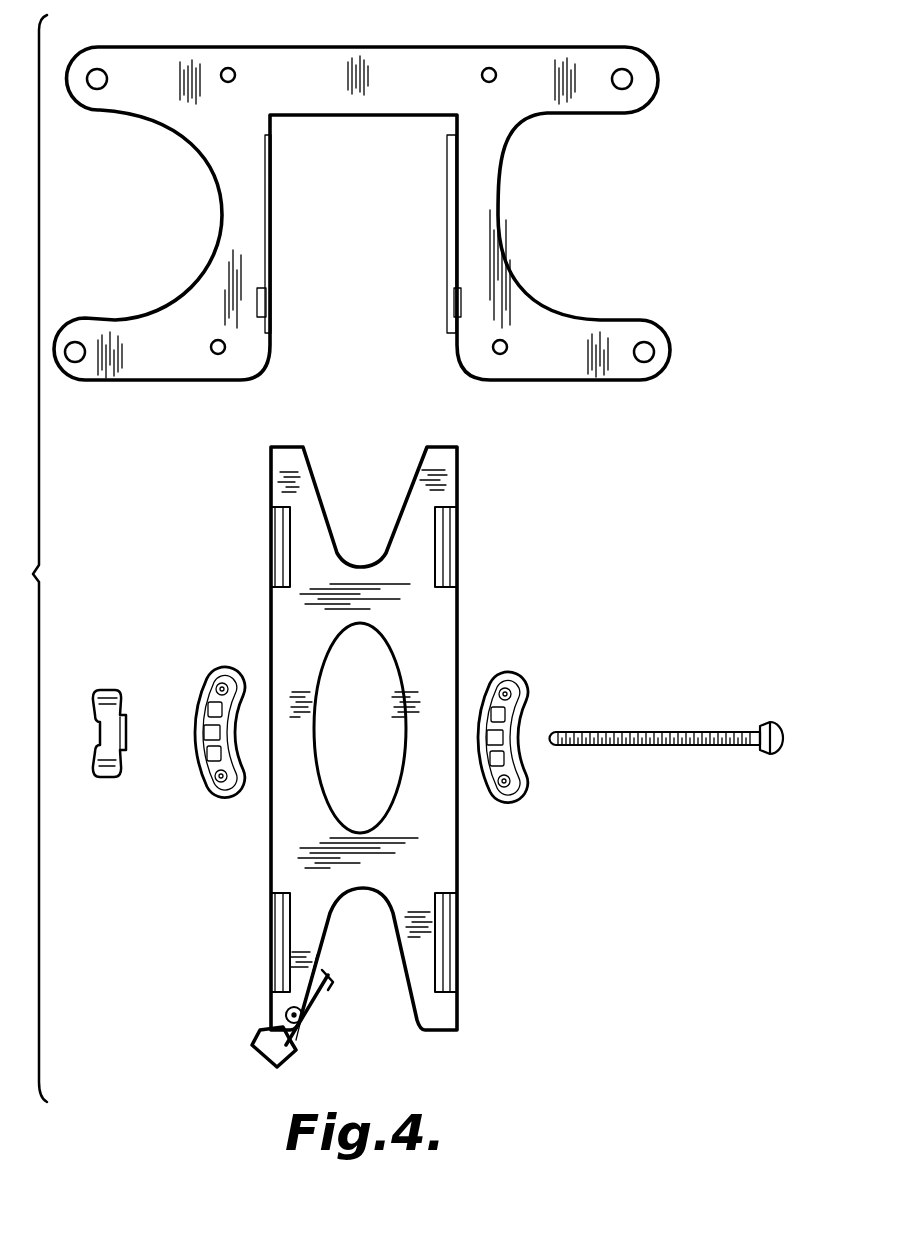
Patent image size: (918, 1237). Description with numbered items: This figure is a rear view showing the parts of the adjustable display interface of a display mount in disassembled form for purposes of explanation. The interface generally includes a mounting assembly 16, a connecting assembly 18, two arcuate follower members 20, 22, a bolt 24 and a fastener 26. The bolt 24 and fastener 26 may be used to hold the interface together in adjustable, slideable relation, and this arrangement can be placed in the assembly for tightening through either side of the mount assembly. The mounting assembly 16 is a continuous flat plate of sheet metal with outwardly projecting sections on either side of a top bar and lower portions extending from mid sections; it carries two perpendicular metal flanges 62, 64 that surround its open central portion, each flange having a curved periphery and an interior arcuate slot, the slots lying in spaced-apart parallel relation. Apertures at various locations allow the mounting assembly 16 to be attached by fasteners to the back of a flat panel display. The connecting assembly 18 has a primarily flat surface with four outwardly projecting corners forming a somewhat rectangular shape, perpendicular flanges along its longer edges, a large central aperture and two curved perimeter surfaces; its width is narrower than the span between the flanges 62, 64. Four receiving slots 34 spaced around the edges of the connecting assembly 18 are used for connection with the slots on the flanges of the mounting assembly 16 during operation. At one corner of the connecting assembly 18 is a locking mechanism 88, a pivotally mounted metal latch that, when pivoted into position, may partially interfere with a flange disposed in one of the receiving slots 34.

The mounting assembly 16 is at (420, 85).
The connecting assembly 18 is at (399, 562).
The arcuate follower member 20 is at (213, 668).
The arcuate follower member 22 is at (518, 681).
The bolt 24 is at (636, 732).
The fastener 26 is at (114, 690).
The receiving slots 34 is at (272, 936).
The perpendicular metal flange 62 is at (274, 211).
The perpendicular metal flange 64 is at (447, 246).
The locking mechanism 88 is at (332, 988).